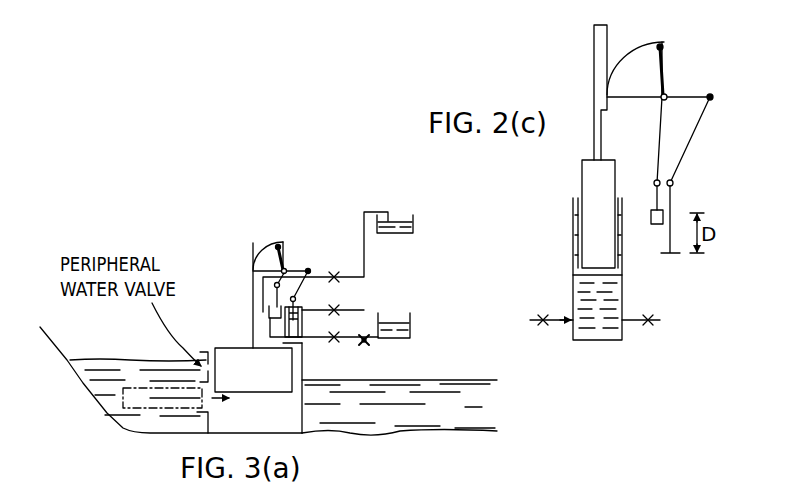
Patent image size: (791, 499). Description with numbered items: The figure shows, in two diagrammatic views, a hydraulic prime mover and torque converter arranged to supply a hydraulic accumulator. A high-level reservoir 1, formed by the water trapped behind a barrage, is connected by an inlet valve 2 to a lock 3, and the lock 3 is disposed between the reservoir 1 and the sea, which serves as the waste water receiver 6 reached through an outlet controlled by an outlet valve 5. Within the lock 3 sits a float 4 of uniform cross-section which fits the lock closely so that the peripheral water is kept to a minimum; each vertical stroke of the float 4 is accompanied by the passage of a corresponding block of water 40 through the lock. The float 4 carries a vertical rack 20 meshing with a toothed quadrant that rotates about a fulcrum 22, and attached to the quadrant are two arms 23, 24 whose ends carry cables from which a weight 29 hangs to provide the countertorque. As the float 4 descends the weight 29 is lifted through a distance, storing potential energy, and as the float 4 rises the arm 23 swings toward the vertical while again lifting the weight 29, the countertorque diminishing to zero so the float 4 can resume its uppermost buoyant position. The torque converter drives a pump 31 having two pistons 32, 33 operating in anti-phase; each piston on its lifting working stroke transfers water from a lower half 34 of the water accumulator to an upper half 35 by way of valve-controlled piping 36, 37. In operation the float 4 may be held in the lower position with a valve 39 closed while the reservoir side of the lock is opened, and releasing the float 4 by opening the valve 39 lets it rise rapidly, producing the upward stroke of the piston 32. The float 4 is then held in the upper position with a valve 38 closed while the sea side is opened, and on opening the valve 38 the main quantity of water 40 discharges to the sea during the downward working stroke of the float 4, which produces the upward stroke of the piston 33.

In FIG. 3A, the high-level reservoir 1 is at (140, 375).
In FIG. 2C, the inlet valve 2 is at (543, 319).
In FIG. 3A, the lock 3 is at (259, 424).
In FIG. 2C, the float 4 is at (592, 191).
In FIG. 3A, the float 4 is at (259, 381).
In FIG. 2C, the outlet valve 5 is at (648, 322).
In FIG. 3A, the waste water receiver 6 is at (375, 413).
In FIG. 3A, the vertical rack 20 is at (253, 284).
In FIG. 2C, the fulcrum 22 is at (667, 99).
In FIG. 2C, the second arm 23 is at (664, 47).
In FIG. 2C, the arm 24 is at (684, 97).
In FIG. 2C, the weight 29 is at (650, 216).
In FIG. 3A, the pump 31 is at (236, 253).
In FIG. 3A, the piston 32 is at (268, 313).
In FIG. 3A, the piston 33 is at (333, 339).
In FIG. 3A, the lower half of water accumulator 34 is at (412, 338).
In FIG. 3A, the upper half of water accumulator 35 is at (396, 221).
In FIG. 3A, the valve-controlled piping 36 is at (362, 342).
In FIG. 3A, the valve-controlled piping 37 is at (394, 241).
In FIG. 3A, the valve 38 is at (336, 308).
In FIG. 3A, the valve 39 is at (333, 275).
In FIG. 3A, the block of water 40 is at (152, 405).